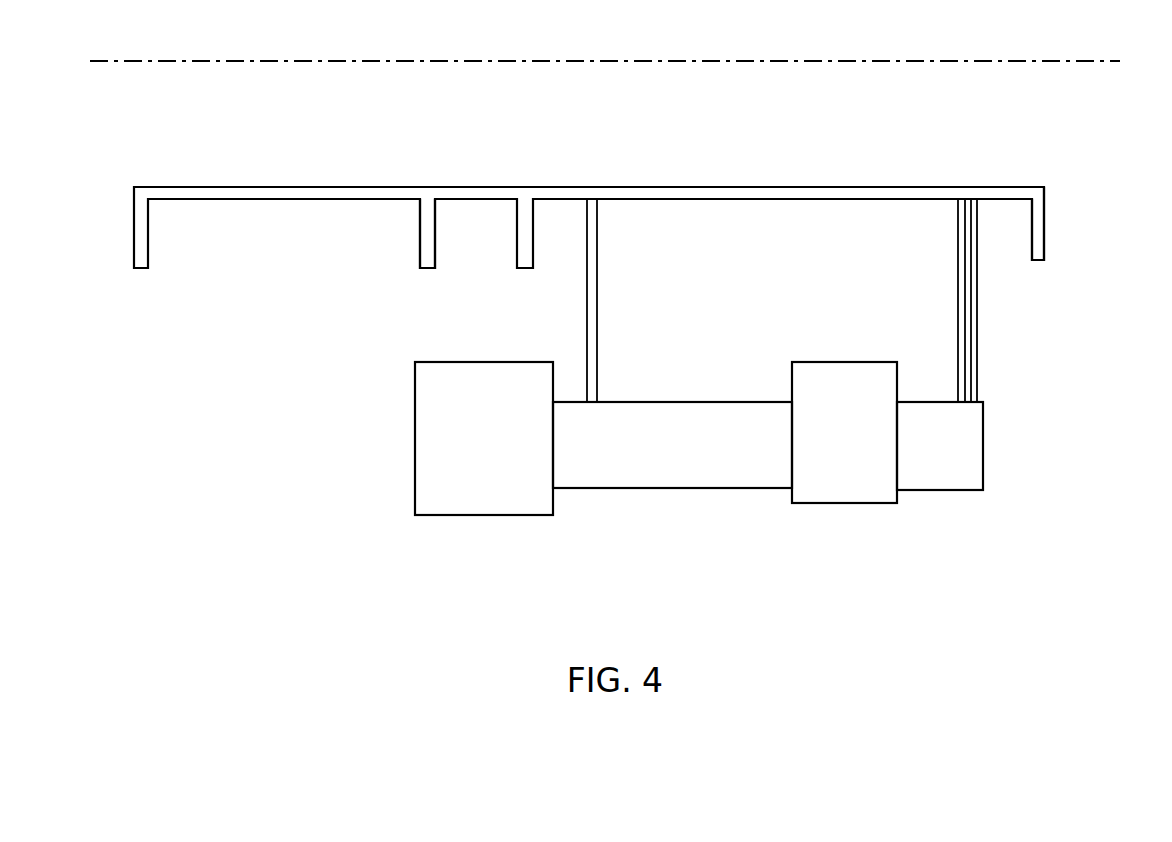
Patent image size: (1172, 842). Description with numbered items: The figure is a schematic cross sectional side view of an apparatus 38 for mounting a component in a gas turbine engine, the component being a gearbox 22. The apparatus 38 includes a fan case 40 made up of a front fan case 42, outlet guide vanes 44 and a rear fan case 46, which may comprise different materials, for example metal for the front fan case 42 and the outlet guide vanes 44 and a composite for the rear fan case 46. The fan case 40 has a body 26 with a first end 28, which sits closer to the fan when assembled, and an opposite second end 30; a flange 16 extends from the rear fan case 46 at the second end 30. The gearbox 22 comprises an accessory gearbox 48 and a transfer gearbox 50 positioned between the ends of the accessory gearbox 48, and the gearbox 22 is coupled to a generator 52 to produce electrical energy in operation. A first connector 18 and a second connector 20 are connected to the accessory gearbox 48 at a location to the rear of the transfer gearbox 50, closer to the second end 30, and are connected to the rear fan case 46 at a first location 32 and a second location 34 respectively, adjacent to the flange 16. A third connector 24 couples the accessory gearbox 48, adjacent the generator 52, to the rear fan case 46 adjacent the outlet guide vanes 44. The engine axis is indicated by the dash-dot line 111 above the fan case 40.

The flange 16 is at (1042, 226).
The first connector 18 is at (976, 343).
The second connector 20 is at (958, 275).
The gearbox 22 is at (733, 532).
The third connector 24 is at (596, 262).
The body 26 is at (742, 192).
The first end 28 is at (130, 384).
The second end 30 is at (1106, 462).
The first location 32 is at (975, 185).
The second location 34 is at (957, 185).
The apparatus 38 is at (303, 568).
The fan case 40 is at (532, 150).
The front fan case 42 is at (268, 186).
The outlet guide vanes 44 is at (465, 187).
The rear fan case 46 is at (648, 187).
The accessory gearbox 48 is at (768, 446).
The transfer gearbox 50 is at (844, 432).
The generator 52 is at (484, 438).
The reference plane 111 is at (1071, 64).